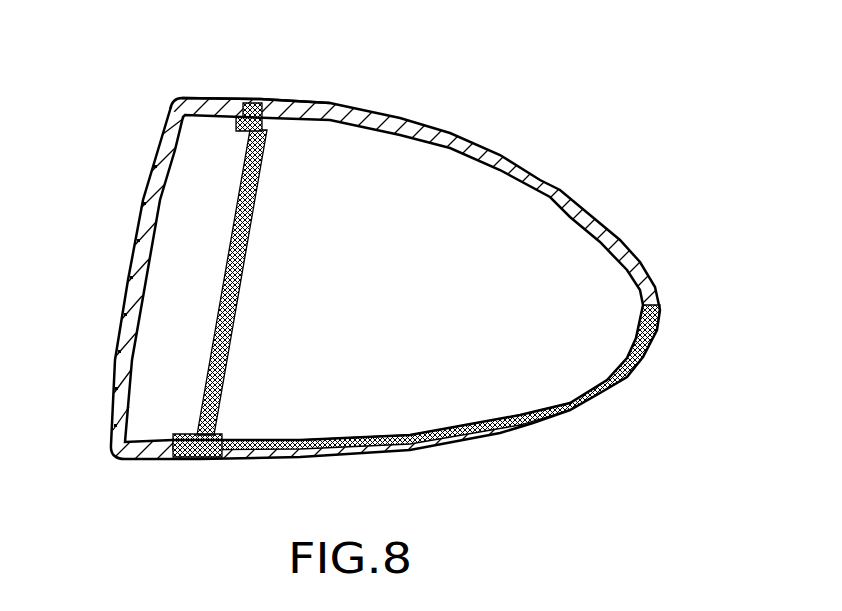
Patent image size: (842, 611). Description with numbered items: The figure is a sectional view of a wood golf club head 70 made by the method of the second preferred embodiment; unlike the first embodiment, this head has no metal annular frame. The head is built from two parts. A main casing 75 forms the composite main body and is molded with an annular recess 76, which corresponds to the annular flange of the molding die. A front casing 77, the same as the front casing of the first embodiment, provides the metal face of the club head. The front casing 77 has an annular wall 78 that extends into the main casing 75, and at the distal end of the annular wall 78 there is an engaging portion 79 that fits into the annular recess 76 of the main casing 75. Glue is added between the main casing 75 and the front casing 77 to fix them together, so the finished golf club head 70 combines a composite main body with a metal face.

The wood golf club head 70 is at (384, 232).
The main casing 75 is at (643, 373).
The annular recess 76 is at (251, 103).
The front casing 77 is at (120, 297).
The annular wall 78 is at (217, 100).
The engaging portion 79 is at (231, 104).